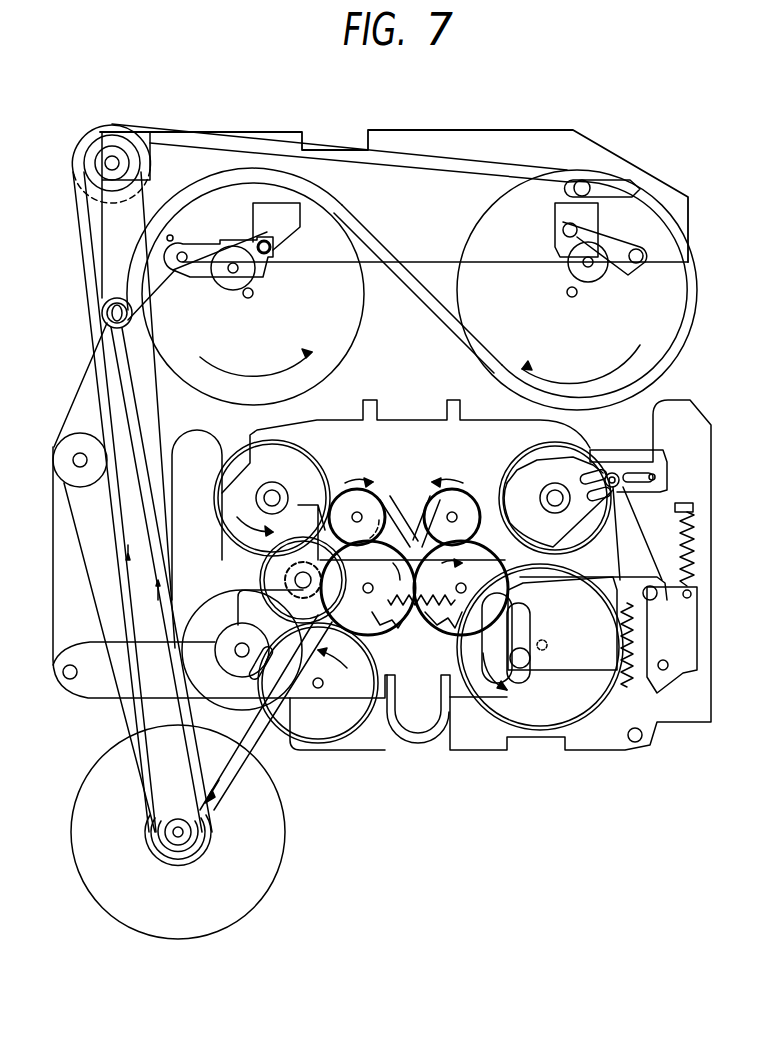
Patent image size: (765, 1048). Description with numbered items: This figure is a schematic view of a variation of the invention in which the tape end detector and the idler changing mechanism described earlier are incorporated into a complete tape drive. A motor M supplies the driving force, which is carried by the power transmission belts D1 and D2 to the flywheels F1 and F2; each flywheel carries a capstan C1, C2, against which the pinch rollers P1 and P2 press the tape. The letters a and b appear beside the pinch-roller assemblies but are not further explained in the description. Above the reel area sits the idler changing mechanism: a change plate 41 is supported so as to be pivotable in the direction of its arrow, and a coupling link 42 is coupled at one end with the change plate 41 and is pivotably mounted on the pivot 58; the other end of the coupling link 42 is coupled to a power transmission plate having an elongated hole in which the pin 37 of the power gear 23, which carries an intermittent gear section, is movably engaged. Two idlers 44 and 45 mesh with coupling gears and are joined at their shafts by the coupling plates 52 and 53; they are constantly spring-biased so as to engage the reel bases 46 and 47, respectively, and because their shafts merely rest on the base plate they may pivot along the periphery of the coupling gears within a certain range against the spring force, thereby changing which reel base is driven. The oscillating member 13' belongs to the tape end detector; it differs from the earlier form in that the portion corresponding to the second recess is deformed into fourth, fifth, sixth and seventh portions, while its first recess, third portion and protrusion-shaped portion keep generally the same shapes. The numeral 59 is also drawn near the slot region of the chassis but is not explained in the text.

The change plate 41 is at (487, 140).
The coupling link 42 is at (87, 377).
The pivot 58 is at (65, 455).
The flywheel F1 is at (350, 327).
The flywheel F2 is at (664, 336).
The pinch roller P1 is at (227, 287).
The capstan C1 is at (253, 295).
The pinch roller P2 is at (597, 276).
The capstan C2 is at (574, 297).
The pin a is at (173, 246).
The pin b is at (642, 250).
The reel base 46 is at (313, 456).
The idler 44 is at (385, 500).
The idler 45 is at (420, 510).
The coupling plate 52 is at (373, 635).
The coupling plate 53 is at (443, 624).
The slot 59 is at (510, 632).
The reel base 47 is at (566, 448).
The oscillating member 13' is at (642, 508).
The power gear 23 is at (505, 707).
The pin 37 is at (503, 660).
The power transmission belt D1 is at (130, 675).
The power transmission belt D2 is at (272, 752).
The motor M is at (90, 783).